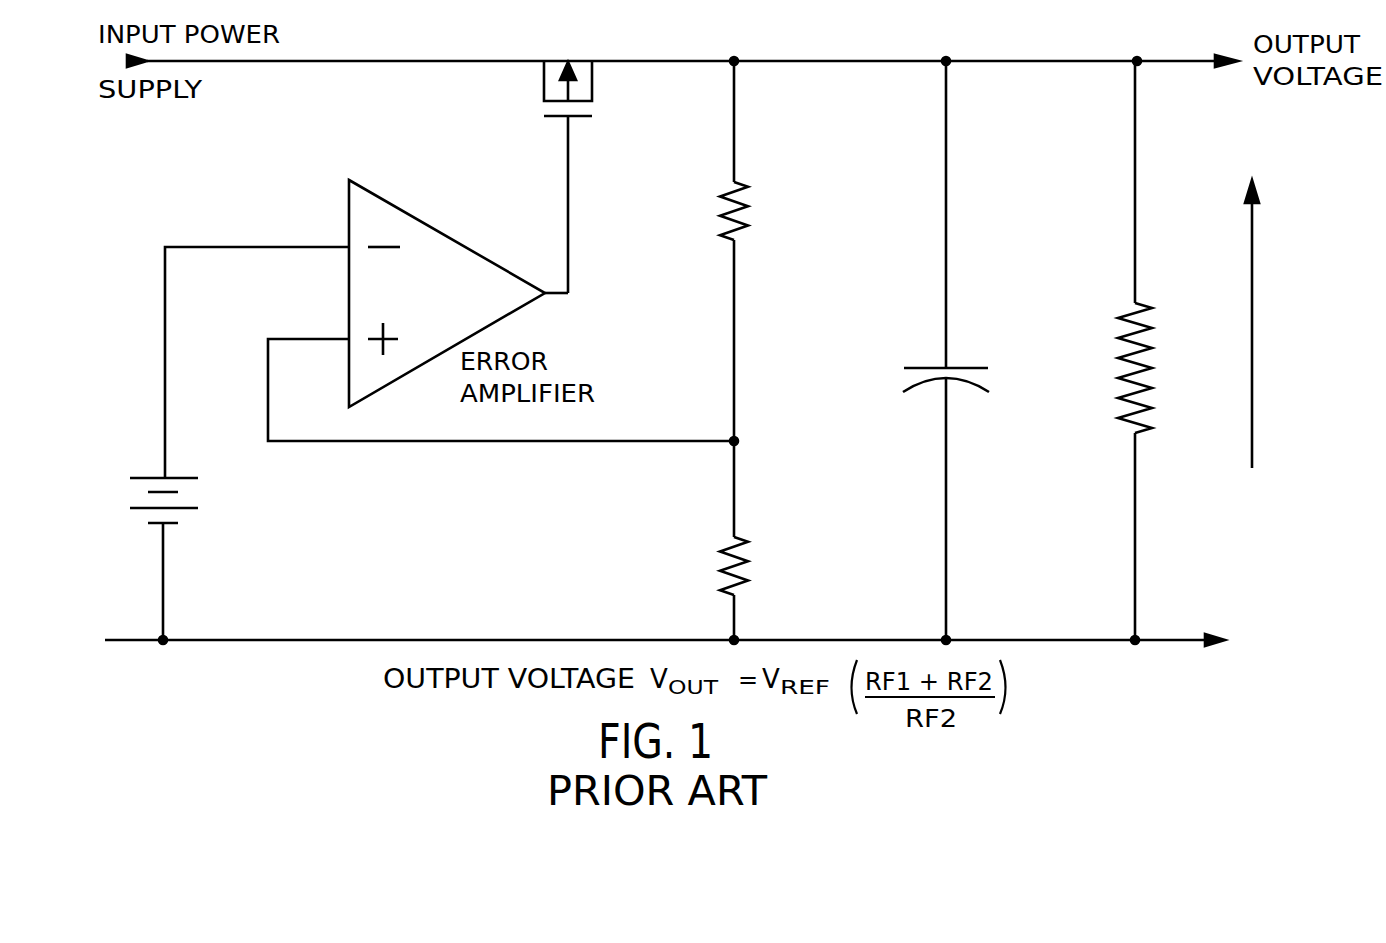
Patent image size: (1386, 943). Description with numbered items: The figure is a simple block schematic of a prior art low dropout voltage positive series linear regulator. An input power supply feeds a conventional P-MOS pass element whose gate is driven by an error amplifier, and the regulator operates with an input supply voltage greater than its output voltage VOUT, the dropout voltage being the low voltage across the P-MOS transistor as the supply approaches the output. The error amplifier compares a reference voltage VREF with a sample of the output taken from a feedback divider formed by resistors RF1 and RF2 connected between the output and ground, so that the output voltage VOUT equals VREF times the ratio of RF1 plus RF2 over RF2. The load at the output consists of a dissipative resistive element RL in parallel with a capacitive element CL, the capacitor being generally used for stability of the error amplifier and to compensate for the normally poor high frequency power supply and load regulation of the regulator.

The reference voltage VREF is at (135, 529).
The feedback resistor RF1 is at (704, 251).
The feedback resistor RF2 is at (694, 540).
The capacitive element CL is at (916, 350).
The resistive element RL is at (1102, 350).
The output voltage VOUT is at (1299, 324).